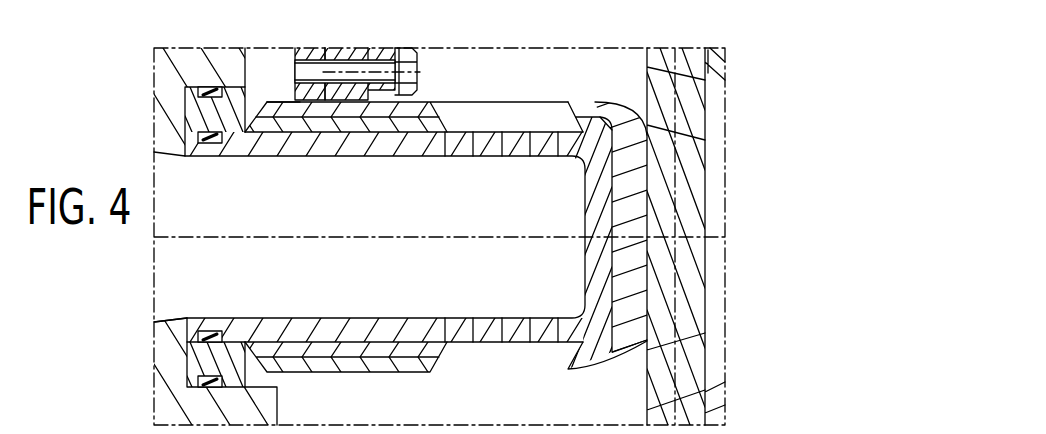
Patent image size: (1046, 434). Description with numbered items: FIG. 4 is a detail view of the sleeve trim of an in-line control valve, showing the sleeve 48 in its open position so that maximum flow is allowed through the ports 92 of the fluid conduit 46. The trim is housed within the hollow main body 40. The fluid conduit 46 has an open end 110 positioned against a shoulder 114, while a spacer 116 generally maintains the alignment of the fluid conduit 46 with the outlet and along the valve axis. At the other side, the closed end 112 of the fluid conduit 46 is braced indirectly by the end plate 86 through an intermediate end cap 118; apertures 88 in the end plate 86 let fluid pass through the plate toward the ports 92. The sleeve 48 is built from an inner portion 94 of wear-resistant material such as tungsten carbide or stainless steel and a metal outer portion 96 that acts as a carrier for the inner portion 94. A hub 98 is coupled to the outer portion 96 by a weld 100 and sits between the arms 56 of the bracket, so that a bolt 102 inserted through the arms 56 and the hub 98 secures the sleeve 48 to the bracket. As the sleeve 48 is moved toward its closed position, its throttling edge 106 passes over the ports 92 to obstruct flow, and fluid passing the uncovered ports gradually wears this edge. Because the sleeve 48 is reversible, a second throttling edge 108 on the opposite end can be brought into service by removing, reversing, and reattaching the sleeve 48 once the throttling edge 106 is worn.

The main body 40 is at (157, 413).
The fluid conduit 46 is at (357, 156).
The sleeve 48 is at (286, 99).
The arms 56 is at (310, 52).
The end plate 86 is at (707, 203).
The apertures 88 is at (688, 137).
The ports 92 is at (445, 134).
The inner portion 94 is at (388, 128).
The outer portion 96 is at (421, 101).
The hub 98 is at (342, 52).
The weld 100 is at (338, 98).
The bolt 102 is at (412, 68).
The throttling edge 106 is at (440, 115).
The second throttling edge 108 is at (257, 113).
The open end 110 is at (216, 317).
The closed end 112 is at (584, 369).
The shoulder 114 is at (188, 317).
The spacer 116 is at (243, 367).
The end cap 118 is at (615, 357).